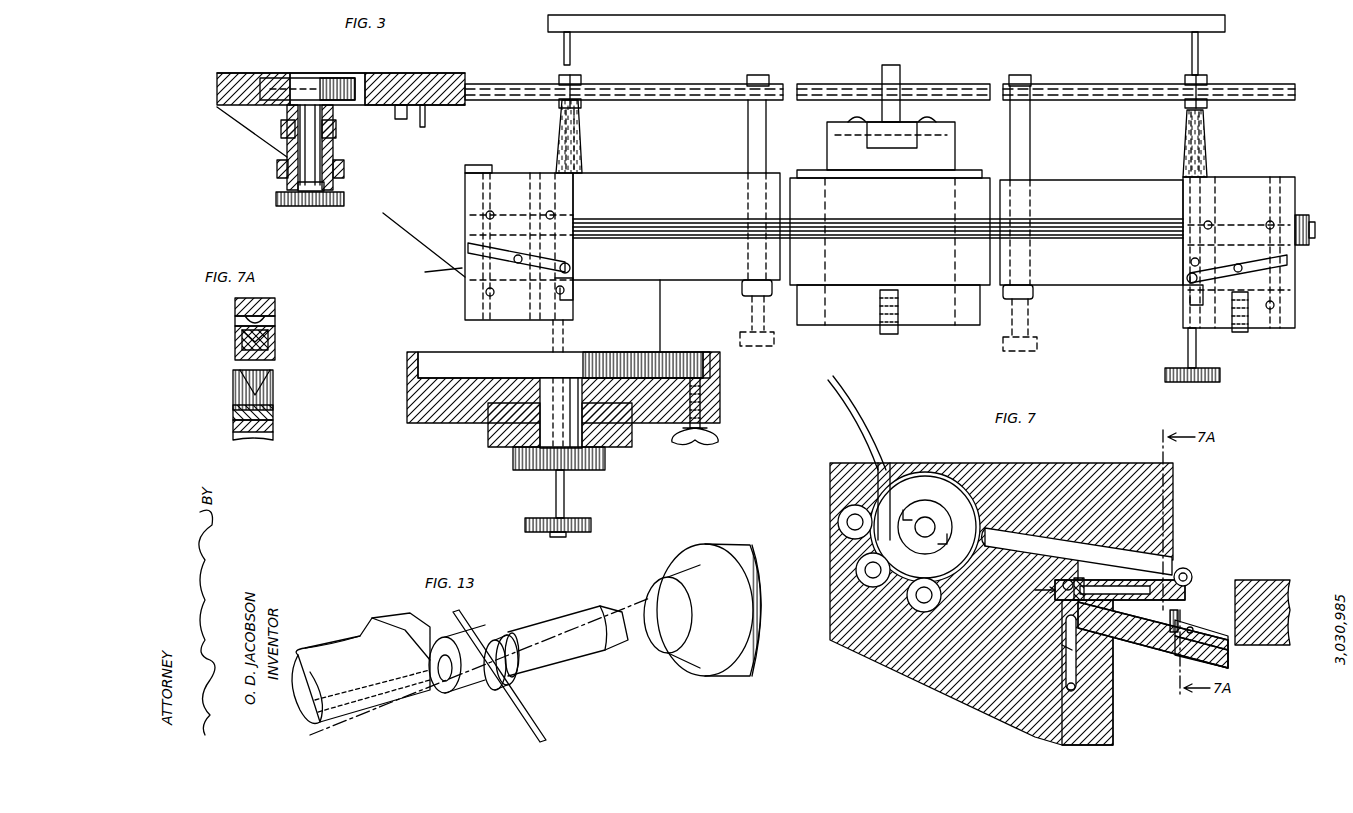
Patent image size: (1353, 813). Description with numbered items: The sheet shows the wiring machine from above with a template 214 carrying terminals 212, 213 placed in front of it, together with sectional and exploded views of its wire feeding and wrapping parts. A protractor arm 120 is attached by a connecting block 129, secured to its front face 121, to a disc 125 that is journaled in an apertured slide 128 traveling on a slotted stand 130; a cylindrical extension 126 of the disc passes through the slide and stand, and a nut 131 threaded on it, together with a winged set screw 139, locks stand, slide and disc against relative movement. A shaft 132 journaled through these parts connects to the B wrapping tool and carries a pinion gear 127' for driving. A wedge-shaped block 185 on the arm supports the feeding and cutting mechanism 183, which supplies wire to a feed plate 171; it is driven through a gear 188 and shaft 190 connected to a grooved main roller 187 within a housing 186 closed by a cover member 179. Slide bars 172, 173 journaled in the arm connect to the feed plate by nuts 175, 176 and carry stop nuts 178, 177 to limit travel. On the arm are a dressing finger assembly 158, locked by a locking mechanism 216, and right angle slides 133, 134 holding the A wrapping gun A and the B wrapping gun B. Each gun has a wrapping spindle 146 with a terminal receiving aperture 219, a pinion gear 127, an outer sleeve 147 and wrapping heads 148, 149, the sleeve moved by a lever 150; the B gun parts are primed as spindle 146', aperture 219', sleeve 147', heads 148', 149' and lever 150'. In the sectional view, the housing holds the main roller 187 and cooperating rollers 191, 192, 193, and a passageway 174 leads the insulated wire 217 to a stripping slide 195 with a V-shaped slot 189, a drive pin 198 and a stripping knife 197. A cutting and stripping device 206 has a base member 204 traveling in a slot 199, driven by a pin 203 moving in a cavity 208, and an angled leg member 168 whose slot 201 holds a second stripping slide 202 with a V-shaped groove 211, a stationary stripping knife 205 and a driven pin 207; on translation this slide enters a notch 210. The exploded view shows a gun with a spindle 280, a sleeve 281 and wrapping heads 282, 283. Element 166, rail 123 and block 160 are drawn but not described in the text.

In FIG. 3, the template 214 is at (712, 14).
In FIG. 3, the terminal 213 is at (572, 52).
In FIG. 3, the terminal 212 is at (1200, 55).
In FIG. 3, the feed plate 171 is at (486, 80).
In FIG. 7, the feed plate 171 is at (1292, 592).
In FIG. 3, the feeding and cutting mechanism 183 is at (217, 88).
In FIG. 7, the feeding and cutting mechanism 183 is at (1040, 463).
In FIG. 3, the cover member 179 is at (233, 73).
In FIG. 3, the housing 186 is at (422, 75).
In FIG. 3, the grooved main roller 187 is at (292, 76).
In FIG. 7, the grooved main roller 187 is at (930, 475).
In FIG. 3, the shaft 190 is at (325, 188).
In FIG. 3, the gear 188 is at (305, 207).
In FIG. 3, the wedge-shaped block 185 is at (387, 215).
In FIG. 3, the outer sleeve 147' is at (593, 136).
In FIG. 3, the wrapping head 148' is at (556, 67).
In FIG. 3, the wrapping head 149' is at (550, 115).
In FIG. 3, the wrapping spindle 146' is at (599, 84).
In FIG. 3, the terminal receiving aperture 219' is at (597, 140).
In FIG. 3, the B wrapping gun B is at (560, 150).
In FIG. 7, the B wrapping gun B is at (1188, 565).
In FIG. 3, the right angle slide 134 is at (530, 193).
In FIG. 3, the lever 150' is at (495, 245).
In FIG. 3, the arm 166 is at (431, 271).
In FIG. 3, the protractor arm 120 is at (650, 175).
In FIG. 3, the rail 123 is at (1093, 225).
In FIG. 3, the slide bar 172 is at (750, 122).
In FIG. 3, the nut 175 is at (766, 80).
In FIG. 3, the stop nut 178 is at (746, 291).
In FIG. 3, the slide bar 173 is at (1030, 122).
In FIG. 3, the block 160 is at (818, 322).
In FIG. 3, the dressing finger assembly 158 is at (937, 311).
In FIG. 3, the locking mechanism 216 is at (898, 330).
In FIG. 3, the nut 176 is at (1018, 80).
In FIG. 3, the stop nut 177 is at (1030, 296).
In FIG. 3, the front face 121 is at (1117, 290).
In FIG. 3, the right angle slide 133 is at (1265, 201).
In FIG. 3, the lever 150 is at (1261, 269).
In FIG. 3, the pinion gear 127 is at (1213, 355).
In FIG. 3, the outer sleeve 147 is at (1219, 143).
In FIG. 3, the wrapping head 148 is at (1174, 67).
In FIG. 3, the wrapping head 149 is at (1173, 115).
In FIG. 13, the wrapping head 149 is at (361, 668).
In FIG. 3, the wrapping spindle 146 is at (1228, 84).
In FIG. 3, the terminal receiving aperture 219 is at (1221, 142).
In FIG. 3, the A wrapping gun A is at (1182, 150).
In FIG. 3, the connecting block 129 is at (662, 318).
In FIG. 3, the shaft 132 is at (570, 337).
In FIG. 3, the disc 125 is at (600, 352).
In FIG. 3, the apertured slide 128 is at (722, 402).
In FIG. 3, the slotted stand 130 is at (488, 440).
In FIG. 3, the cylindrical extension 126 is at (552, 390).
In FIG. 3, the nut 131 is at (605, 460).
In FIG. 3, the pinion gear 127' is at (575, 503).
In FIG. 3, the winged set screw 139 is at (716, 440).
In FIG. 7A, the stripping knife 197 is at (268, 317).
In FIG. 7, the stripping knife 197 is at (1082, 580).
In FIG. 7A, the V-shaped slot 189 is at (240, 320).
In FIG. 7, the V-shaped slot 189 is at (1195, 577).
In FIG. 7A, the stripping slide 195 is at (270, 340).
In FIG. 7, the stripping slide 195 is at (1178, 590).
In FIG. 7A, the V-shaped groove 211 is at (242, 378).
In FIG. 7A, the stationary stripping knife 205 is at (268, 392).
In FIG. 7, the stationary stripping knife 205 is at (1180, 612).
In FIG. 7A, the second stripping slide 202 is at (270, 410).
In FIG. 7, the second stripping slide 202 is at (1232, 645).
In FIG. 7A, the slot 201 is at (270, 424).
In FIG. 7, the slot 201 is at (1232, 660).
In FIG. 7, the cutting and stripping device 206 is at (1112, 718).
In FIG. 7, the passageway 174 is at (885, 470).
In FIG. 7, the insulated wire 217 is at (862, 405).
In FIG. 7, the roller 191 is at (840, 522).
In FIG. 7, the roller 192 is at (857, 572).
In FIG. 7, the roller 193 is at (918, 610).
In FIG. 7, the slot 199 is at (1020, 730).
In FIG. 7, the notch 210 is at (1200, 530).
In FIG. 7, the drive pin 198 is at (1070, 578).
In FIG. 7, the angled leg member 168 is at (1232, 668).
In FIG. 7, the driven pin 207 is at (1192, 626).
In FIG. 7, the base member 204 is at (1076, 683).
In FIG. 7, the cavity 208 is at (1072, 652).
In FIG. 7, the pin 203 is at (1071, 700).
In FIG. 13, the wrapping head 282 is at (443, 630).
In FIG. 13, the wrapping head 283 is at (490, 630).
In FIG. 13, the sleeve 281 is at (540, 620).
In FIG. 13, the spindle 280 is at (598, 612).